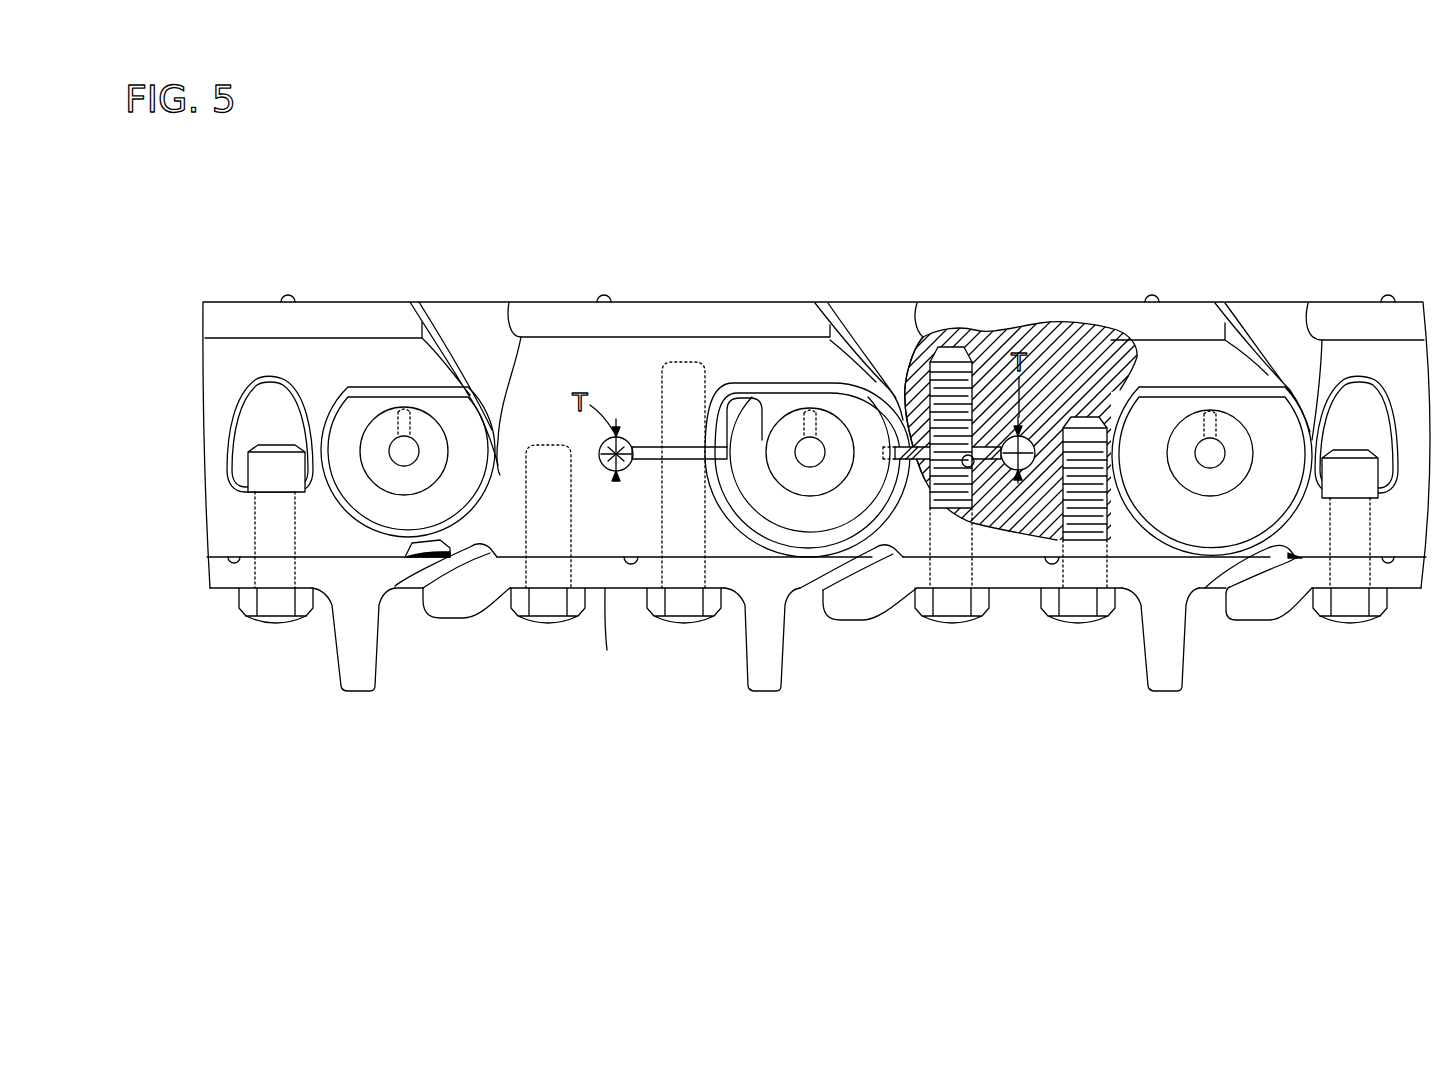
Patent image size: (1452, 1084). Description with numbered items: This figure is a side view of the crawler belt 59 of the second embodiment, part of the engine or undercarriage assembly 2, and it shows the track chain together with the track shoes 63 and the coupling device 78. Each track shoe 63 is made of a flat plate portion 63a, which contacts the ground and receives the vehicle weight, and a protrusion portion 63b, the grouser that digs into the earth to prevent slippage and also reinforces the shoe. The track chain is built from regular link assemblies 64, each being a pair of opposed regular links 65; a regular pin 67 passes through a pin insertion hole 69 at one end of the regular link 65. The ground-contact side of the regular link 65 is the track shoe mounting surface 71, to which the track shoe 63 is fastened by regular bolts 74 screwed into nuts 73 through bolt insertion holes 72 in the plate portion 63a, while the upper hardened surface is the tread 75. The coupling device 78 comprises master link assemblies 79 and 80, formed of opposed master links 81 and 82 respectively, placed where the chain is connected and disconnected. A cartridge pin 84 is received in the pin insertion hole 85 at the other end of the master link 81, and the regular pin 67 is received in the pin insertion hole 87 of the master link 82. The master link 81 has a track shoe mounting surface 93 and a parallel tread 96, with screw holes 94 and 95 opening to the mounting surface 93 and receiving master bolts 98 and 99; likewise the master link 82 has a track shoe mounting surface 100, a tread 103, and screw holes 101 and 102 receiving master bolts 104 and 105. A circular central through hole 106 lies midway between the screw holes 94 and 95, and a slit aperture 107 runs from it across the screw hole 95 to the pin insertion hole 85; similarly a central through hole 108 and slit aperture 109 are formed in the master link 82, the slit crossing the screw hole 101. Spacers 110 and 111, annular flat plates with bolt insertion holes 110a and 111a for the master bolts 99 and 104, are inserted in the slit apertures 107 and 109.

The engine 2 is at (342, 268).
The crawler belt 59 is at (890, 762).
The track shoe 63 is at (332, 663).
The plate portion 63a is at (607, 650).
The protrusion portion 63b is at (765, 693).
The regular link assembly 64 is at (262, 302).
The regular link 65 is at (323, 302).
The regular pin 67 is at (383, 427).
The pin insertion hole 69 is at (375, 470).
The track shoe mounting surface 71 is at (234, 556).
The bolt insertion hole 72 is at (272, 596).
The nut 73 is at (248, 472).
The regular bolt 74 is at (276, 631).
The tread 75 is at (290, 308).
The coupling device 78 is at (1213, 195).
The master link assembly 79 is at (497, 302).
The master link assembly 80 is at (1095, 302).
The master link 81 is at (557, 302).
The master link 82 is at (1032, 303).
The cartridge pin 84 is at (824, 425).
The pin insertion hole 85 is at (787, 482).
The pin insertion hole 87 is at (1207, 488).
The track shoe mounting surface 93 is at (630, 556).
The screw hole 94 is at (533, 478).
The screw hole 95 is at (674, 474).
The tread 96 is at (603, 315).
The master bolt 98 is at (548, 630).
The master bolt 99 is at (685, 630).
The track shoe mounting surface 100 is at (1050, 556).
The screw hole 101 is at (923, 493).
The screw hole 102 is at (1117, 513).
The tread 103 is at (1152, 308).
The master bolt 104 is at (950, 630).
The master bolt 105 is at (1078, 630).
The central through hole 106 is at (600, 448).
The slit aperture 107 is at (763, 423).
The central through hole 108 is at (1031, 442).
The slit aperture 109 is at (895, 447).
The spacer 110 is at (758, 425).
The bolt insertion hole 110a is at (628, 438).
The spacer 111 is at (1013, 427).
The bolt insertion hole 111a is at (985, 472).